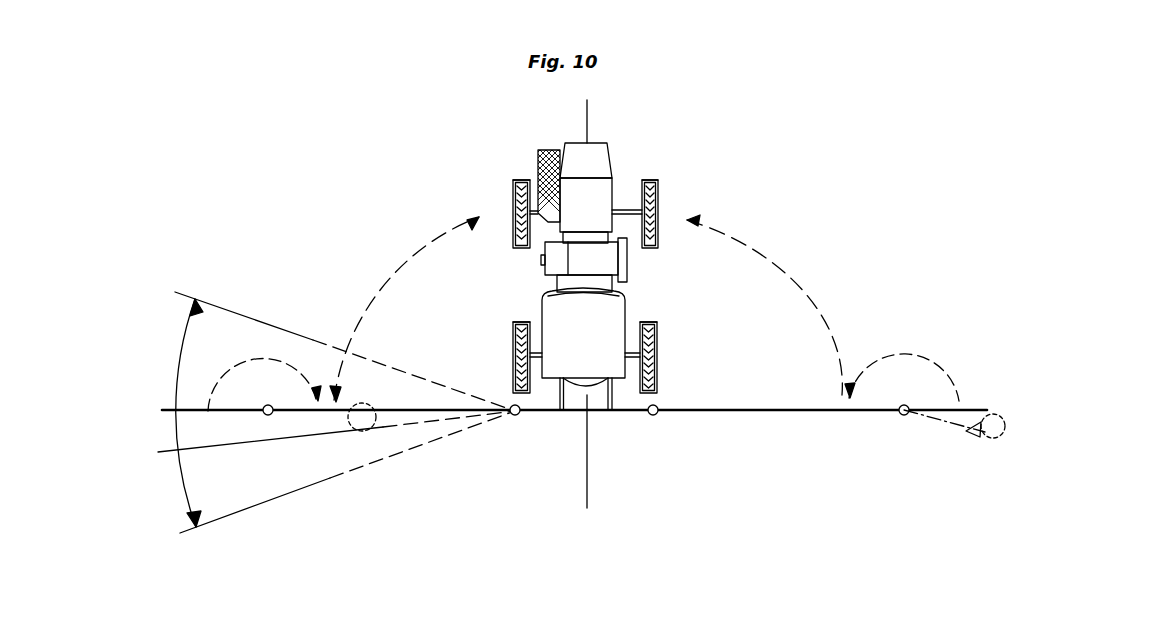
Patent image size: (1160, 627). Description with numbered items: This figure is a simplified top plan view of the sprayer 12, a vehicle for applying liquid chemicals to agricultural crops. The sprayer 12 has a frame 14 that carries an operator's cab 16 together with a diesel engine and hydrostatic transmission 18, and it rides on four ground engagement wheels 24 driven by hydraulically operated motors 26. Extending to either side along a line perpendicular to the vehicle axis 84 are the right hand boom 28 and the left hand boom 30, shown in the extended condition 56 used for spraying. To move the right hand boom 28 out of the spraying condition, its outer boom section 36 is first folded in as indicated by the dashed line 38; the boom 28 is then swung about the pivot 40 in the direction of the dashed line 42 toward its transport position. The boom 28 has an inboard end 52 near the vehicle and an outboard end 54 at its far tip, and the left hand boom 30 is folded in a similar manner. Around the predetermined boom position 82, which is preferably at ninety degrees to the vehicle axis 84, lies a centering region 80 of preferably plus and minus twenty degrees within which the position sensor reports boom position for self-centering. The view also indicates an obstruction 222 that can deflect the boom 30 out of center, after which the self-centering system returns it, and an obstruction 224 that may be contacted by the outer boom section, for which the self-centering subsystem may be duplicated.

The sprayer 12 is at (600, 266).
The frame 14 is at (618, 289).
The operator's cab 16 is at (613, 187).
The diesel engine and hydrostatic transmission 18 is at (630, 268).
The ground engagement wheels 24 is at (513, 224).
The hydraulically operated motors 26 is at (532, 183).
The right hand boom 28 is at (819, 410).
The left hand boom 30 is at (408, 410).
The outer boom section 36 is at (968, 410).
The dashed line 38 is at (926, 352).
The pivot 40 is at (657, 413).
The dashed line 42 is at (813, 300).
The inboard end 52 is at (670, 403).
The outboard end 54 is at (999, 413).
The extended condition 56 is at (853, 427).
The centering region 80 is at (183, 338).
The predetermined boom position 82 is at (340, 365).
The vehicle axis 84 is at (587, 458).
The obstruction 222 is at (353, 395).
The obstruction 224 is at (965, 432).